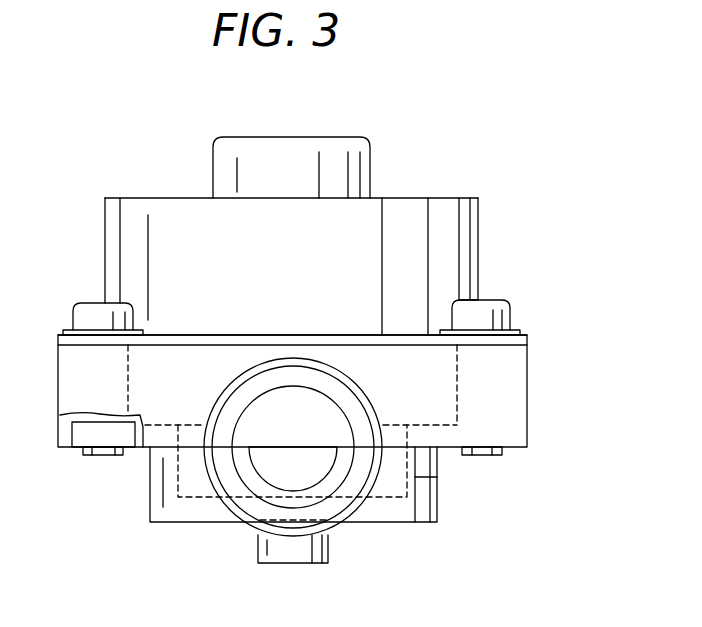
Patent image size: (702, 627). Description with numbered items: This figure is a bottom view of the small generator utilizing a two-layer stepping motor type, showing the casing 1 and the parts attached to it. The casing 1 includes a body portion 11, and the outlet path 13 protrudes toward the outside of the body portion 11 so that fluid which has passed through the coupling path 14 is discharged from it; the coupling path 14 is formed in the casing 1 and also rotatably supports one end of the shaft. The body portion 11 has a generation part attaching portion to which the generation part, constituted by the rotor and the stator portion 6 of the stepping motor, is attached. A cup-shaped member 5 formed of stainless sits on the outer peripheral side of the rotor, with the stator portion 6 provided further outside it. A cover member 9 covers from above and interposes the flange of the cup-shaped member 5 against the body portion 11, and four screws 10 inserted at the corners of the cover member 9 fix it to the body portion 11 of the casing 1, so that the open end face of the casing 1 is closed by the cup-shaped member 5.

The casing 1 is at (555, 360).
The cup-shaped member 5 is at (297, 150).
The stator portion 6 is at (403, 242).
The cover member 9 is at (210, 335).
The screws 10 is at (88, 303).
The body portion 11 is at (503, 403).
The outlet path 13 is at (372, 490).
The coupling path 14 is at (438, 477).